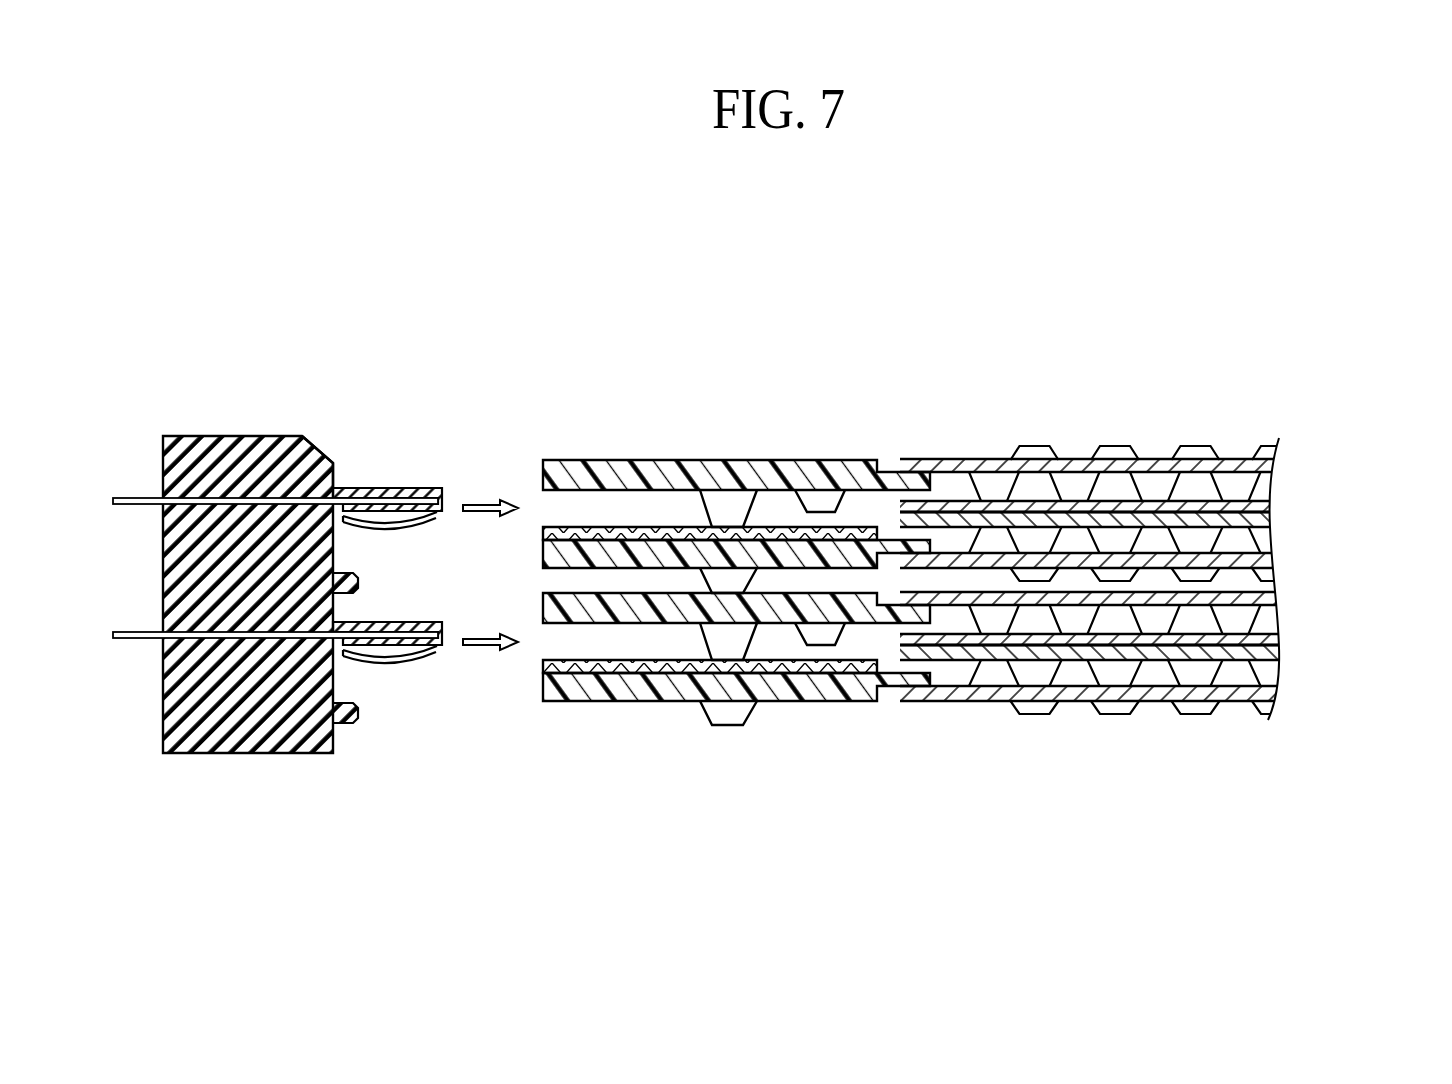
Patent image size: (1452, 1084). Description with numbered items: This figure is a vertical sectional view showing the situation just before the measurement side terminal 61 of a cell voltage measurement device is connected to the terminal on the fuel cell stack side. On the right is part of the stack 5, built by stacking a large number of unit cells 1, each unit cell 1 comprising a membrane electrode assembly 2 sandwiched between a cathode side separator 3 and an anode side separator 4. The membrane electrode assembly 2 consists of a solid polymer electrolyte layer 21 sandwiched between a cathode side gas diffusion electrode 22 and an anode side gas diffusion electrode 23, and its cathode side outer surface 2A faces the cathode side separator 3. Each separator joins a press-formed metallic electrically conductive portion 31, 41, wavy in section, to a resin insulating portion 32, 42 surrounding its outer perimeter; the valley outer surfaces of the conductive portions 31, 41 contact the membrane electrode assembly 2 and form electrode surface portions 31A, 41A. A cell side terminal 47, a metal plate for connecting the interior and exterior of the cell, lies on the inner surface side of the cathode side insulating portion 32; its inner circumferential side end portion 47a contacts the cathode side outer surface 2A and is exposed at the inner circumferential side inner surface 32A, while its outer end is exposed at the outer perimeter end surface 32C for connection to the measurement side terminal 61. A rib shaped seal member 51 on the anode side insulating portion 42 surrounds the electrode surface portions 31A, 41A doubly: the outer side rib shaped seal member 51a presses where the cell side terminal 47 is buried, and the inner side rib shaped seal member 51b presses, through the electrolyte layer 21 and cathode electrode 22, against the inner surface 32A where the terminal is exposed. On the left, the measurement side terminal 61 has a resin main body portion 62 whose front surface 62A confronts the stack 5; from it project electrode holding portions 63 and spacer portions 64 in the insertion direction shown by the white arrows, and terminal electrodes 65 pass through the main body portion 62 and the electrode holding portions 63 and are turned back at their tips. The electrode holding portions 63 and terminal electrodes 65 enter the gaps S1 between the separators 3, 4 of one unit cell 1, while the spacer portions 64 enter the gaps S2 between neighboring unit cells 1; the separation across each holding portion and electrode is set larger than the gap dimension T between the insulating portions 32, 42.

The unit cell 1 is at (990, 583).
The membrane electrode assembly 2 is at (1086, 627).
The cathode side outer surface 2A is at (960, 661).
The cathode side separator 3 is at (969, 589).
The anode side separator 4 is at (975, 481).
The stack 5 is at (1140, 438).
The solid polymer electrolyte layer 21 is at (1272, 640).
The cathode side gas diffusion electrode 22 is at (1272, 660).
The anode side gas diffusion electrode 23 is at (1272, 627).
The electrically conductive portion 31 is at (887, 702).
The electrode surface portion 31A is at (1245, 519).
The cathode side insulating portion 32 is at (836, 702).
The inner circumferential side inner surface 32A is at (652, 537).
The outer perimeter end surface 32C is at (533, 690).
The electrically conductive portion 41 is at (915, 462).
The electrode surface portion 41A is at (1279, 476).
The anode side insulating portion 42 is at (845, 462).
The cell side terminal 47 is at (542, 527).
The inner circumferential side end portion 47a is at (793, 673).
The rib shaped seal member 51 is at (761, 500).
The outer side rib shaped seal member 51a is at (720, 497).
The inner side rib shaped seal member 51b is at (810, 497).
The measurement side terminal 61 is at (289, 543).
The main body portion 62 is at (254, 446).
The front surface 62A is at (337, 478).
The electrode holding portion 63 is at (382, 488).
The spacer portion 64 is at (348, 724).
The terminal electrode 65 is at (396, 529).
The gap S1 is at (507, 662).
The gap S2 is at (553, 578).
The gap dimension T is at (597, 623).